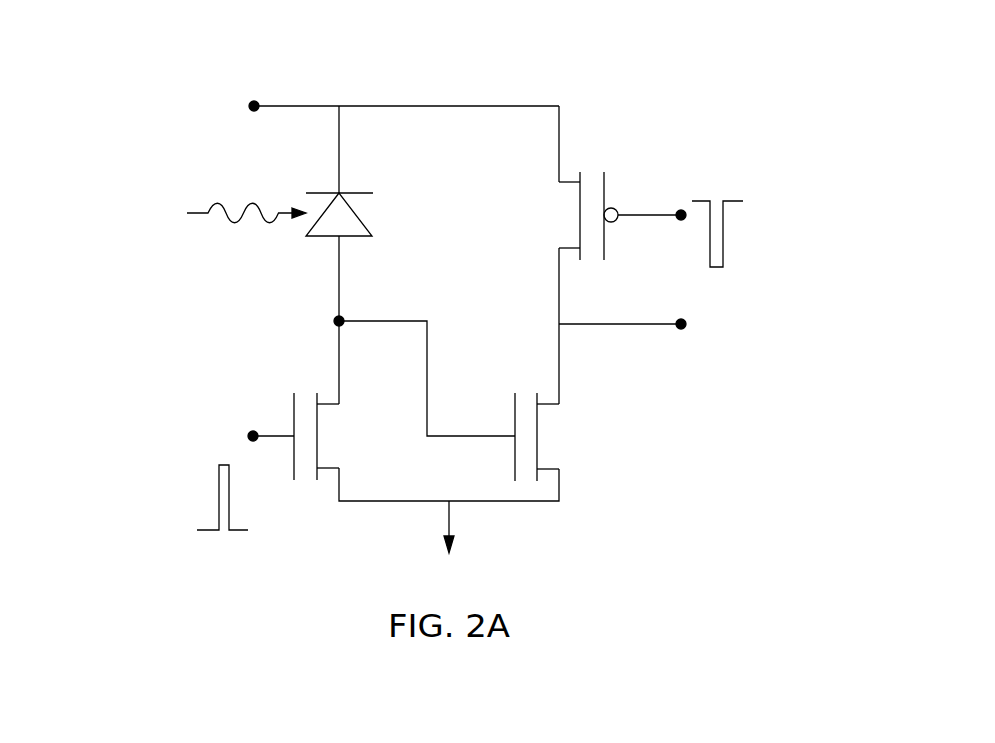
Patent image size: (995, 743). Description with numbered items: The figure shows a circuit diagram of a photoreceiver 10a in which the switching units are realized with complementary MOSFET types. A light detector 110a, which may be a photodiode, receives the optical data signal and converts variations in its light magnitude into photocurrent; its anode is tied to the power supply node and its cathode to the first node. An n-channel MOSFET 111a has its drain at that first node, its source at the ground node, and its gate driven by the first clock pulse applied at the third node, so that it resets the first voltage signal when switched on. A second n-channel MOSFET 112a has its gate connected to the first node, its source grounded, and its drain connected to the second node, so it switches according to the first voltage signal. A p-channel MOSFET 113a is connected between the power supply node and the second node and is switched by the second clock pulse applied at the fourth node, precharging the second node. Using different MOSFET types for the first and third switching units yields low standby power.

The photoreceiver 10a is at (661, 50).
The light detector 110a is at (357, 193).
The n-channel MOSFET 111a is at (317, 436).
The n-channel MOSFET 112a is at (537, 436).
The p-channel MOSFET 113a is at (580, 212).